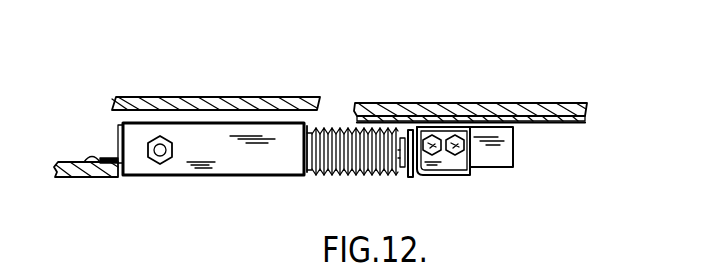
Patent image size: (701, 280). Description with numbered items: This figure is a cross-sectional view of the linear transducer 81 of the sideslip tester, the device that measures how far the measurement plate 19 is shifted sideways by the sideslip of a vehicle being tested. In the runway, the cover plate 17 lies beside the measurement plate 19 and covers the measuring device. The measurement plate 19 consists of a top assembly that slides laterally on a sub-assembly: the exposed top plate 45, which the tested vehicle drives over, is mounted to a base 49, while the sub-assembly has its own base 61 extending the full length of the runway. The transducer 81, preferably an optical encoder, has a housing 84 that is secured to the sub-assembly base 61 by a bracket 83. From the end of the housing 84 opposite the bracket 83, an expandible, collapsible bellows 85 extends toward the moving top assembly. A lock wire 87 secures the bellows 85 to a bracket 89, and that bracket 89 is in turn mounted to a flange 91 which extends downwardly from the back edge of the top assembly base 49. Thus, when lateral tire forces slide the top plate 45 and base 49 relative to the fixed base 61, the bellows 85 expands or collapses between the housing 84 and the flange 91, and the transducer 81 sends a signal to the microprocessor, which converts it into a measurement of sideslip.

The cover plate 17 is at (266, 97).
The measurement plate 19 is at (494, 89).
The top plate 45 is at (549, 102).
The base 49 is at (584, 123).
The base 61 is at (86, 178).
The linear transducer 81 is at (483, 179).
The bracket 83 is at (117, 160).
The housing 84 is at (258, 160).
The bellows 85 is at (313, 177).
The lock wire 87 is at (400, 172).
The bracket 89 is at (444, 163).
The flange 91 is at (512, 152).